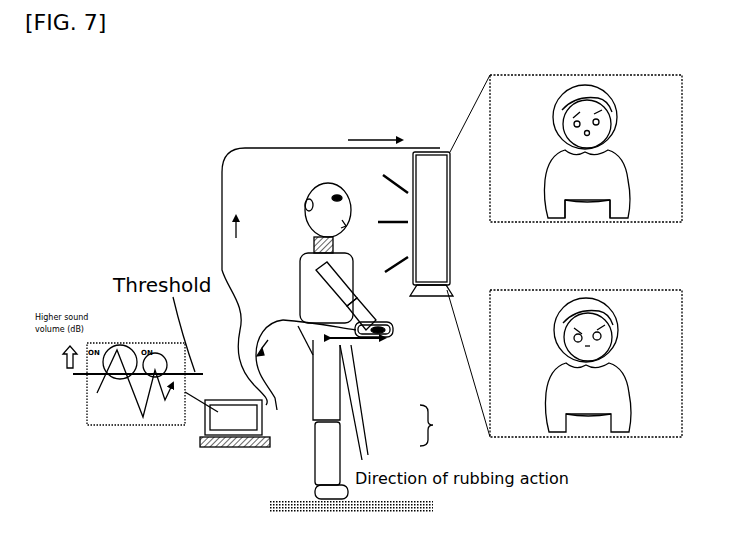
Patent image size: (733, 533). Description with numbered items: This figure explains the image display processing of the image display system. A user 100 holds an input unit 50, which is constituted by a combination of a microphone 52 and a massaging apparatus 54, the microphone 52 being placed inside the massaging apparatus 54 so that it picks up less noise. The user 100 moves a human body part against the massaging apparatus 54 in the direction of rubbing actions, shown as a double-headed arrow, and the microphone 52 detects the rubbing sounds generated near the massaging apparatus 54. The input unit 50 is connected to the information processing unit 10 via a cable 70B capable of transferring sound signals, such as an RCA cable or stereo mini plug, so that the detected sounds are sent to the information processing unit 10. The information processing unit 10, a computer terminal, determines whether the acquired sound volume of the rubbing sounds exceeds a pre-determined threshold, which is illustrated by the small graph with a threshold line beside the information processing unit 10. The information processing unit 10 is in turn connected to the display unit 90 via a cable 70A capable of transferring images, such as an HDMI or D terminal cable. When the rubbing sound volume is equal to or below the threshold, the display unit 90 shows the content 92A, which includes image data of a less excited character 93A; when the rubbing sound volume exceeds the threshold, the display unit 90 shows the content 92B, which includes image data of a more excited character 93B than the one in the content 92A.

The information processing unit 10 is at (232, 420).
The input unit 50 is at (435, 425).
The microphone 52 is at (378, 340).
The massaging apparatus 54 is at (393, 338).
The cable 70A is at (247, 148).
The cable 70B is at (283, 320).
The display unit 90 is at (428, 175).
The content 92A is at (505, 320).
The content 92B is at (522, 110).
The less excited character 93A is at (583, 312).
The more excited character 93B is at (605, 92).
The user 100 is at (320, 183).